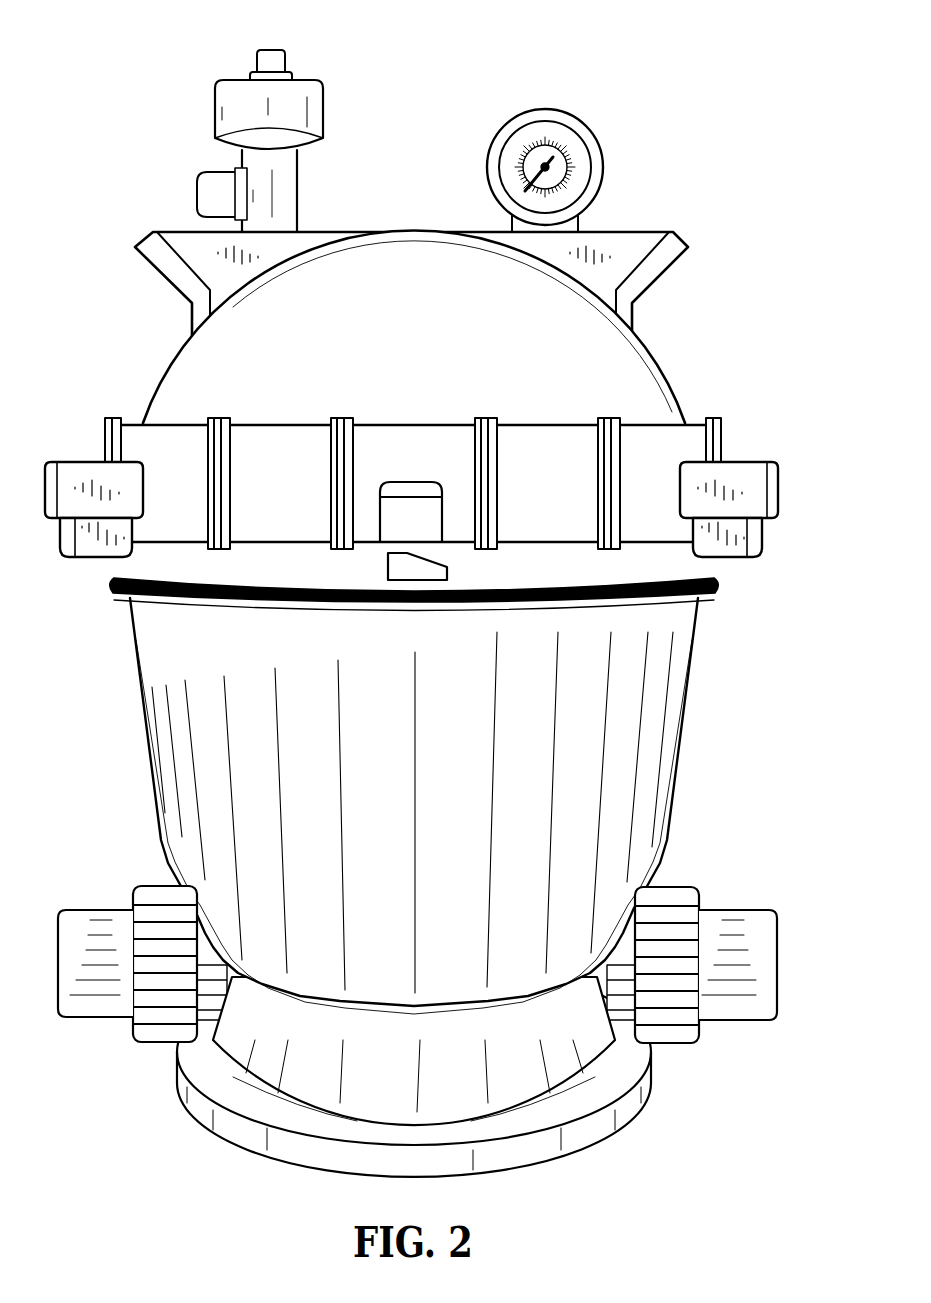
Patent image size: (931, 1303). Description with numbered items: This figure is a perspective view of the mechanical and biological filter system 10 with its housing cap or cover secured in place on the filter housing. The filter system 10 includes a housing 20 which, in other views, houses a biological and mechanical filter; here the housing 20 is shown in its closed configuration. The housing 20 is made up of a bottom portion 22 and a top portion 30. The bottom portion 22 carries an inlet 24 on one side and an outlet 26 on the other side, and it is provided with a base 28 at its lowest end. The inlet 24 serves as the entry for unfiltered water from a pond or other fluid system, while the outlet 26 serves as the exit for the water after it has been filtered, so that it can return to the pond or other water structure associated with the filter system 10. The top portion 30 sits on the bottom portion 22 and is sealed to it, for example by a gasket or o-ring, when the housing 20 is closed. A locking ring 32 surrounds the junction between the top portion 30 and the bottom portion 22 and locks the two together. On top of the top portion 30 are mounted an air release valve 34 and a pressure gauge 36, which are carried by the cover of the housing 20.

The filter system 10 is at (713, 345).
The housing 20 is at (703, 663).
The bottom portion 22 is at (667, 871).
The inlet 24 is at (72, 920).
The outlet 26 is at (763, 942).
The base 28 is at (600, 1132).
The top portion 30 is at (180, 370).
The locking ring 32 is at (720, 437).
The air release valve 34 is at (227, 92).
The pressure gauge 36 is at (568, 138).